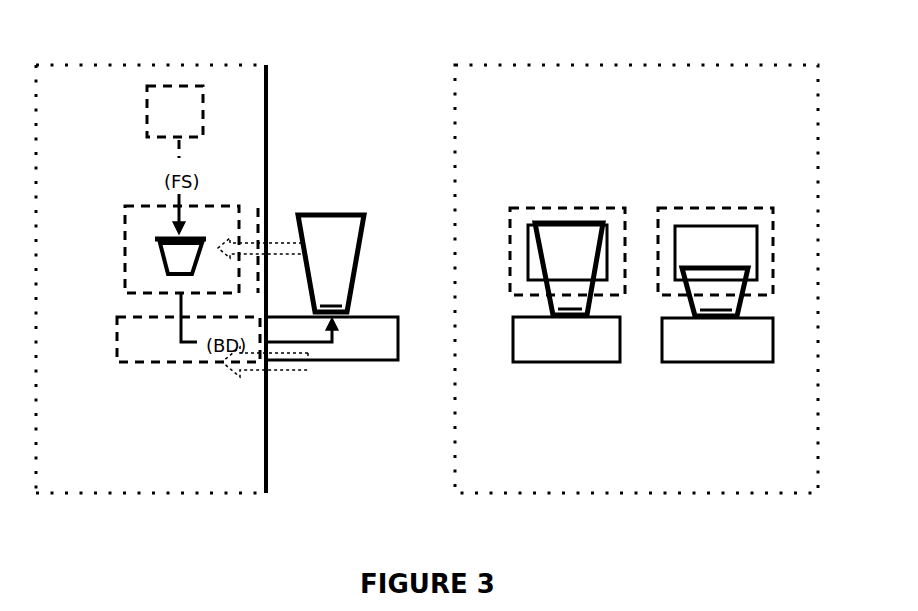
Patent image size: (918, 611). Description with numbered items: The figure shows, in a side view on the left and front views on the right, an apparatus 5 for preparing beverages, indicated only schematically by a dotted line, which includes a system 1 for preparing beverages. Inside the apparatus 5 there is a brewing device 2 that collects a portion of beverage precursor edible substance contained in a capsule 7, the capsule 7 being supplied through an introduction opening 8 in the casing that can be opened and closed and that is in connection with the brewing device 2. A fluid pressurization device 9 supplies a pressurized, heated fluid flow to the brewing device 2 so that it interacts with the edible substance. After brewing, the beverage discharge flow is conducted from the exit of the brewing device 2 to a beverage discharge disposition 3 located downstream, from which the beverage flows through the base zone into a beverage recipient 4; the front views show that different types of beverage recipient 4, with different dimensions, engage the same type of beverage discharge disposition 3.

The system 1 is at (421, 248).
The brewing device 2 is at (445, 237).
The beverage discharge disposition 3 is at (519, 325).
The beverage recipient 4 is at (523, 265).
The apparatus 5 is at (150, 279).
The capsule 7 is at (166, 256).
The introduction opening 8 is at (762, 197).
The fluid pressurization device 9 is at (175, 122).